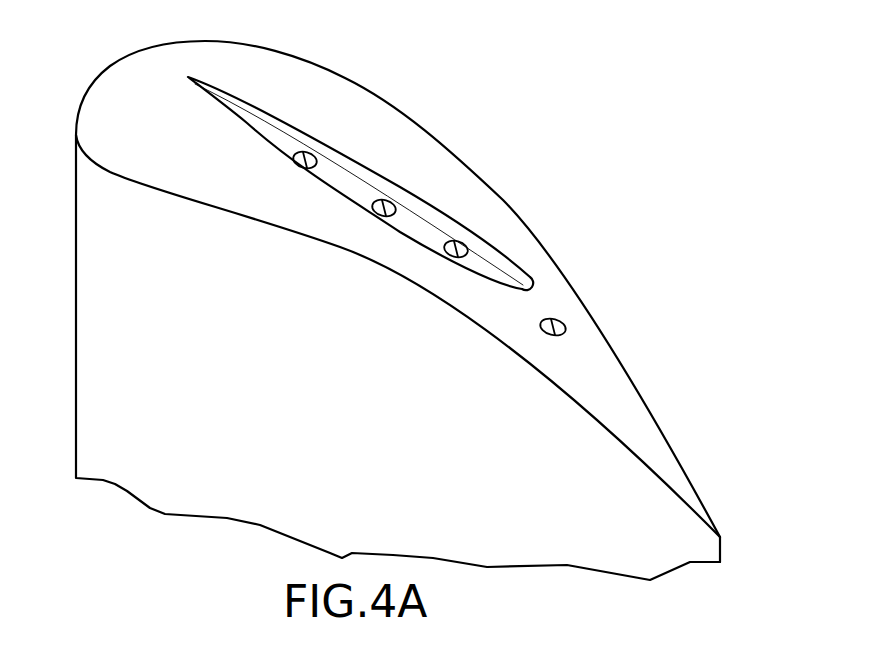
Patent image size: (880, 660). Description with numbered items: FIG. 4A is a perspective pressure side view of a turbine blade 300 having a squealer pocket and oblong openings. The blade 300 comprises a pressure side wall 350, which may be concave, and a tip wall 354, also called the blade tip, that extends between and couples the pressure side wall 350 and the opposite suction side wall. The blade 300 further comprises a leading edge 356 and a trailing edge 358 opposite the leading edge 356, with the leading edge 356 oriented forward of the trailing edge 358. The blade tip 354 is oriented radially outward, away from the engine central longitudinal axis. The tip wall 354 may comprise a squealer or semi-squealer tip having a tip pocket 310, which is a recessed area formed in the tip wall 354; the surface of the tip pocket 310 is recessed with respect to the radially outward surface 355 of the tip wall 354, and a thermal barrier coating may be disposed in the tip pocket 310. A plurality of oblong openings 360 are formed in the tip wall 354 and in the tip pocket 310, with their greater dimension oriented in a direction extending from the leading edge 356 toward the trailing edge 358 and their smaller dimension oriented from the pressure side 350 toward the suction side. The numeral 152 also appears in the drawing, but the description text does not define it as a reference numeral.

The blade 300 is at (419, 292).
The tip slot 152 is at (447, 147).
The tip pocket 310 is at (460, 232).
The pressure side wall 350 is at (336, 363).
The tip wall 354 is at (243, 78).
The radially outward surface 355 is at (398, 270).
The leading edge 356 is at (107, 67).
The trailing edge 358 is at (722, 544).
The oblong openings 360 is at (557, 310).